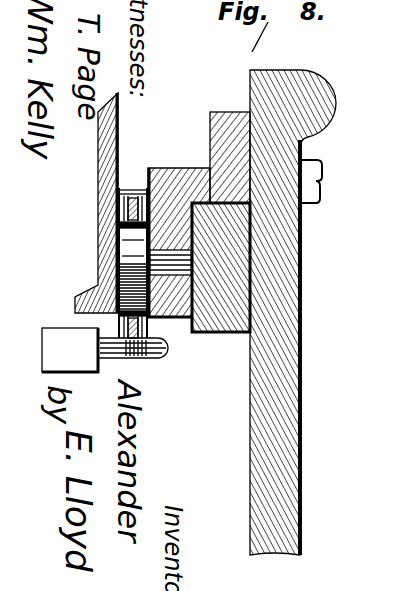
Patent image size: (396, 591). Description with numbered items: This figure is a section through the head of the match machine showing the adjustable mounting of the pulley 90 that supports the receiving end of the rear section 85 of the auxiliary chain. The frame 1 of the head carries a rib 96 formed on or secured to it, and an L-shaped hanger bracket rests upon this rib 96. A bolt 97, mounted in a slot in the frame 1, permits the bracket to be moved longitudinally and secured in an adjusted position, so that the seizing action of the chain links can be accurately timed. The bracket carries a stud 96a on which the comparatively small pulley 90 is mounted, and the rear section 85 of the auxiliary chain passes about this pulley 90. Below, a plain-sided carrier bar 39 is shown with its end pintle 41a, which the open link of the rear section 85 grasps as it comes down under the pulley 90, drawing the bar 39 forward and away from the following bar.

The frame 1 is at (294, 312).
The bolt 97 is at (322, 180).
The rib 96 is at (240, 236).
The stud 96a is at (179, 242).
The rear section of the auxiliary chain 85 is at (118, 213).
The pulley 90 is at (122, 258).
The pintle 41a is at (160, 358).
The bar 39 is at (70, 350).